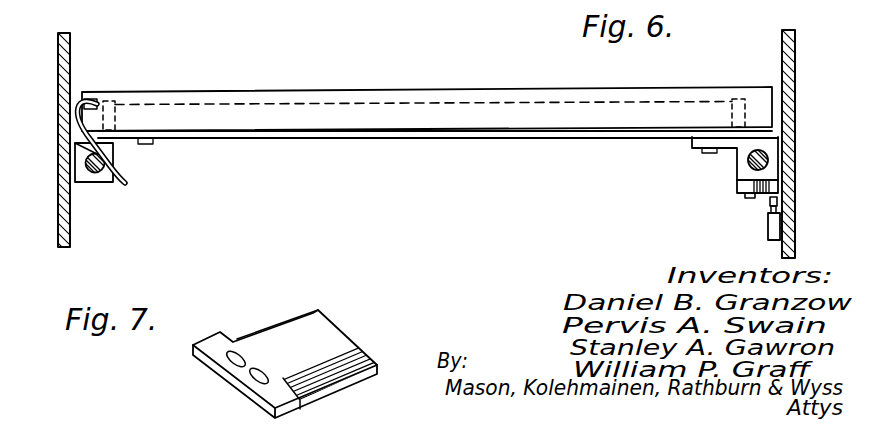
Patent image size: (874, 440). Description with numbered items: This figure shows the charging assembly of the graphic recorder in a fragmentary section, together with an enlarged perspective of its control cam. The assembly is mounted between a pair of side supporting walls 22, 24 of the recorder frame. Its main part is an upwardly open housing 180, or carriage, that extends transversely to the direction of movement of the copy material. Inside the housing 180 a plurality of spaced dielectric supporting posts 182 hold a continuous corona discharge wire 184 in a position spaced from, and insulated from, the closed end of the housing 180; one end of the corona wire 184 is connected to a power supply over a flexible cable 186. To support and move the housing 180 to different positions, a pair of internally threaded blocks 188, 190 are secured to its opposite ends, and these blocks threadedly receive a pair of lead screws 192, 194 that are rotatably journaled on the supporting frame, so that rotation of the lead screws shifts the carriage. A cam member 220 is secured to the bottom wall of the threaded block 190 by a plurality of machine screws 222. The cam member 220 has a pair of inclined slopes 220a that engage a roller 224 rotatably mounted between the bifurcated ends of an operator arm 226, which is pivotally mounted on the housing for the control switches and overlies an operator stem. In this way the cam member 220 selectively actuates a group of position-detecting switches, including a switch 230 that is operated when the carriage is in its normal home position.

In FIG. 6, the side supporting wall 22 is at (57, 51).
In FIG. 6, the side supporting wall 24 is at (797, 59).
In FIG. 6, the housing 180 is at (171, 91).
In FIG. 6, the dielectric supporting posts 182 is at (110, 99).
In FIG. 6, the corona discharge wire 184 is at (239, 102).
In FIG. 6, the flexible cable 186 is at (76, 118).
In FIG. 6, the internally threaded block 188 is at (90, 184).
In FIG. 6, the internally threaded block 190 is at (736, 157).
In FIG. 6, the lead screw 192 is at (85, 165).
In FIG. 6, the lead screw 194 is at (767, 155).
In FIG. 6, the cam member 220 is at (740, 188).
In FIG. 7, the cam member 220 is at (327, 330).
In FIG. 7, the inclined slopes 220a is at (284, 316).
In FIG. 6, the machine screws 222 is at (747, 198).
In FIG. 6, the roller 224 is at (779, 196).
In FIG. 6, the operator arm 226 is at (777, 211).
In FIG. 6, the switch 230 is at (781, 233).